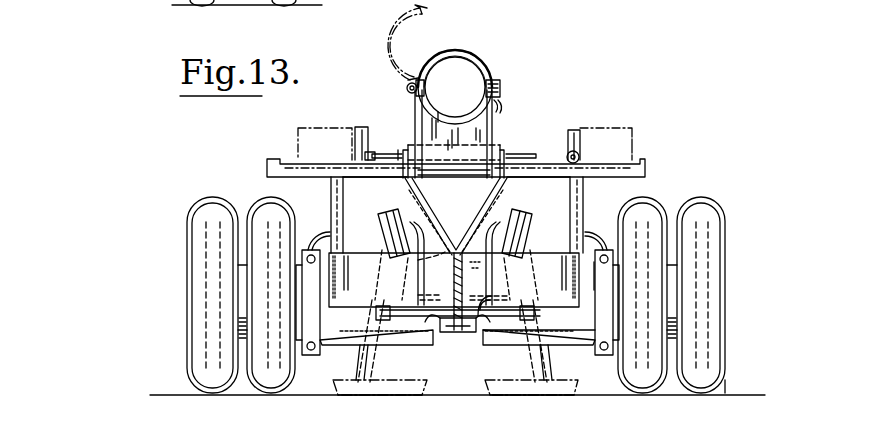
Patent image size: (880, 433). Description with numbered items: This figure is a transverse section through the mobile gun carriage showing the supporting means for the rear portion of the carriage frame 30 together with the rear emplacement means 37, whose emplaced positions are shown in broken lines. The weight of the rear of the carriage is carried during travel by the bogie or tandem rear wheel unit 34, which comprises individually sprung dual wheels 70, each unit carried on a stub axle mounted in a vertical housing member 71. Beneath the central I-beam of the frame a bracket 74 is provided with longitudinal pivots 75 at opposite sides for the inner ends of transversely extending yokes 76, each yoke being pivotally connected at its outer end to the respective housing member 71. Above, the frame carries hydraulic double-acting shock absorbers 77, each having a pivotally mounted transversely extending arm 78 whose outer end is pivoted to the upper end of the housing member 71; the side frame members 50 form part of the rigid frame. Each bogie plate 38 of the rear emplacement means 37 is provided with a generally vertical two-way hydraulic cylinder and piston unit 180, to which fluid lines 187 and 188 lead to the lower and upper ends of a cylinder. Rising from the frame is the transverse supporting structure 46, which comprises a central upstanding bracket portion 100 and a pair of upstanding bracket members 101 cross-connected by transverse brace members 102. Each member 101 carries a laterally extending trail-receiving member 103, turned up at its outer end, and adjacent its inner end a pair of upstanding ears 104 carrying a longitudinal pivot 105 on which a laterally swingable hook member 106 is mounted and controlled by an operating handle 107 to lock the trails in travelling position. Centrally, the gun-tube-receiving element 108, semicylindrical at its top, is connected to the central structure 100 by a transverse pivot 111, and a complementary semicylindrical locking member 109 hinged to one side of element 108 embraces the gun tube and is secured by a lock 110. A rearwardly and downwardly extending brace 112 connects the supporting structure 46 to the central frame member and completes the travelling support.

The longitudinal main frame 30 is at (601, 278).
The bogie or tandem rear wheel unit 34 is at (730, 363).
The rear emplacement means 37 is at (535, 351).
The bogie plate 38 is at (356, 343).
The transverse supporting structure 46 is at (401, 145).
The side frame member 50 is at (335, 292).
The dual wheel 70 is at (212, 212).
The vertical housing member 71 is at (308, 320).
The bracket 74 is at (452, 332).
The longitudinal pivot 75 is at (428, 340).
The yoke 76 is at (314, 350).
The shock absorber 77 is at (340, 255).
The transversely extending arm 78 is at (318, 232).
The central upstanding bracket portion 100 is at (410, 150).
The upstanding bracket member 101 is at (340, 195).
The transverse brace member 102 is at (388, 178).
The trail-receiving member 103 is at (268, 160).
The upstanding ear 104 is at (365, 150).
The longitudinal pivot 105 is at (342, 150).
The hook member 106 is at (355, 150).
The operating handle 107 is at (398, 153).
The gun-tube-receiving element 108 is at (490, 125).
The locking member 109 is at (463, 52).
The lock 110 is at (494, 82).
The transverse pivot 111 is at (470, 138).
The brace 112 is at (460, 201).
The two-way hydraulic cylinder and piston unit 180 is at (392, 224).
The fluid line 187 is at (445, 308).
The fluid line 188 is at (412, 215).